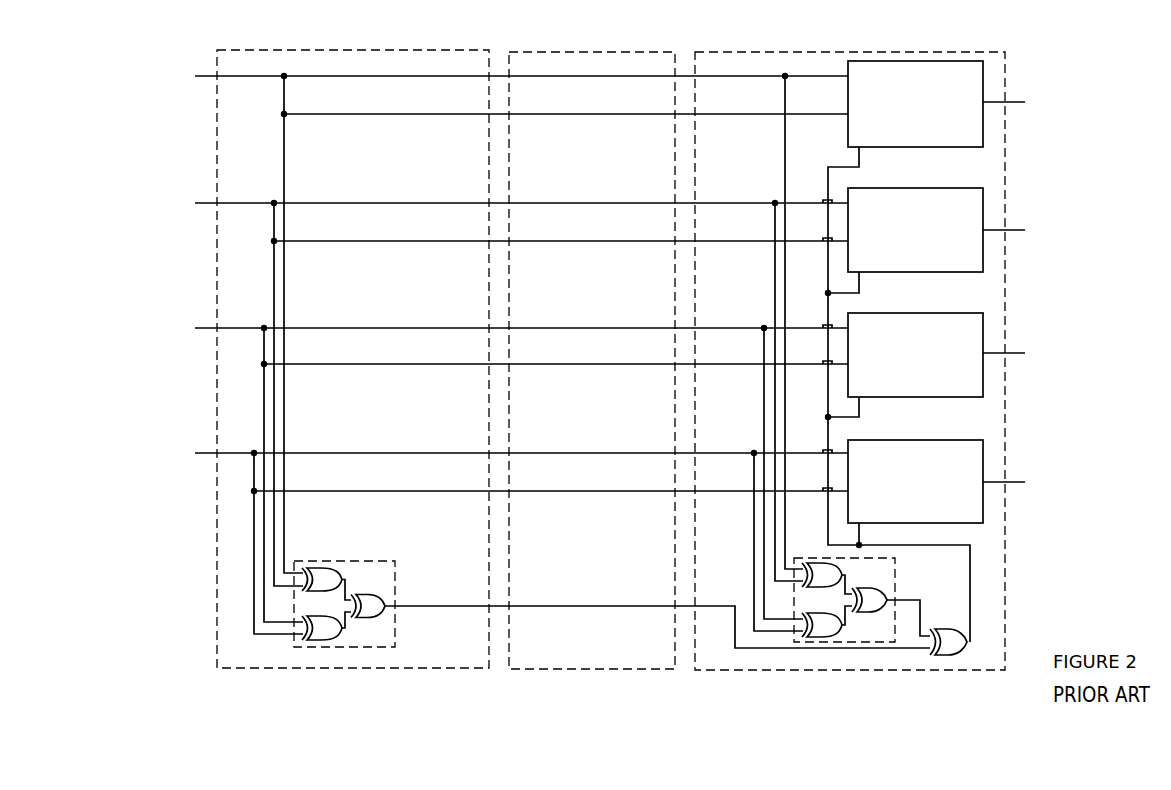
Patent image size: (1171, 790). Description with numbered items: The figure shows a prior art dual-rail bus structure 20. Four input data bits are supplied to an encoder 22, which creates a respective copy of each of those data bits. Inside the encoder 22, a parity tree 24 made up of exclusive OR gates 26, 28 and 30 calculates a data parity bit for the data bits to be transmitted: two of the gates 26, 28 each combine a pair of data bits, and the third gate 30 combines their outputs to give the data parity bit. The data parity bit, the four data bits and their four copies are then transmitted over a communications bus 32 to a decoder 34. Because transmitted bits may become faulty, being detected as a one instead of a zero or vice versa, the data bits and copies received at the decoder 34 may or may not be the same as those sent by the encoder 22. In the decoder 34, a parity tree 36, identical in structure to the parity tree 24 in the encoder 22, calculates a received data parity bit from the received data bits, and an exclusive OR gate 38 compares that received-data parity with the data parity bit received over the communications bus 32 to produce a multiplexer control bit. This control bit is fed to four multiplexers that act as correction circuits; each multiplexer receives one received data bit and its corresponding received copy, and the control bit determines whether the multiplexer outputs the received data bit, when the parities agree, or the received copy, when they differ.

The dual-rail bus structure 20 is at (226, 42).
The encoder 22 is at (218, 575).
The parity tree 24 is at (325, 648).
The exclusive OR gate 26 is at (318, 591).
The exclusive OR gate 28 is at (312, 612).
The exclusive OR gate 30 is at (373, 617).
The communications bus 32 is at (558, 669).
The decoder 34 is at (748, 670).
The parity tree 36 is at (876, 643).
The exclusive OR gate 38 is at (957, 652).